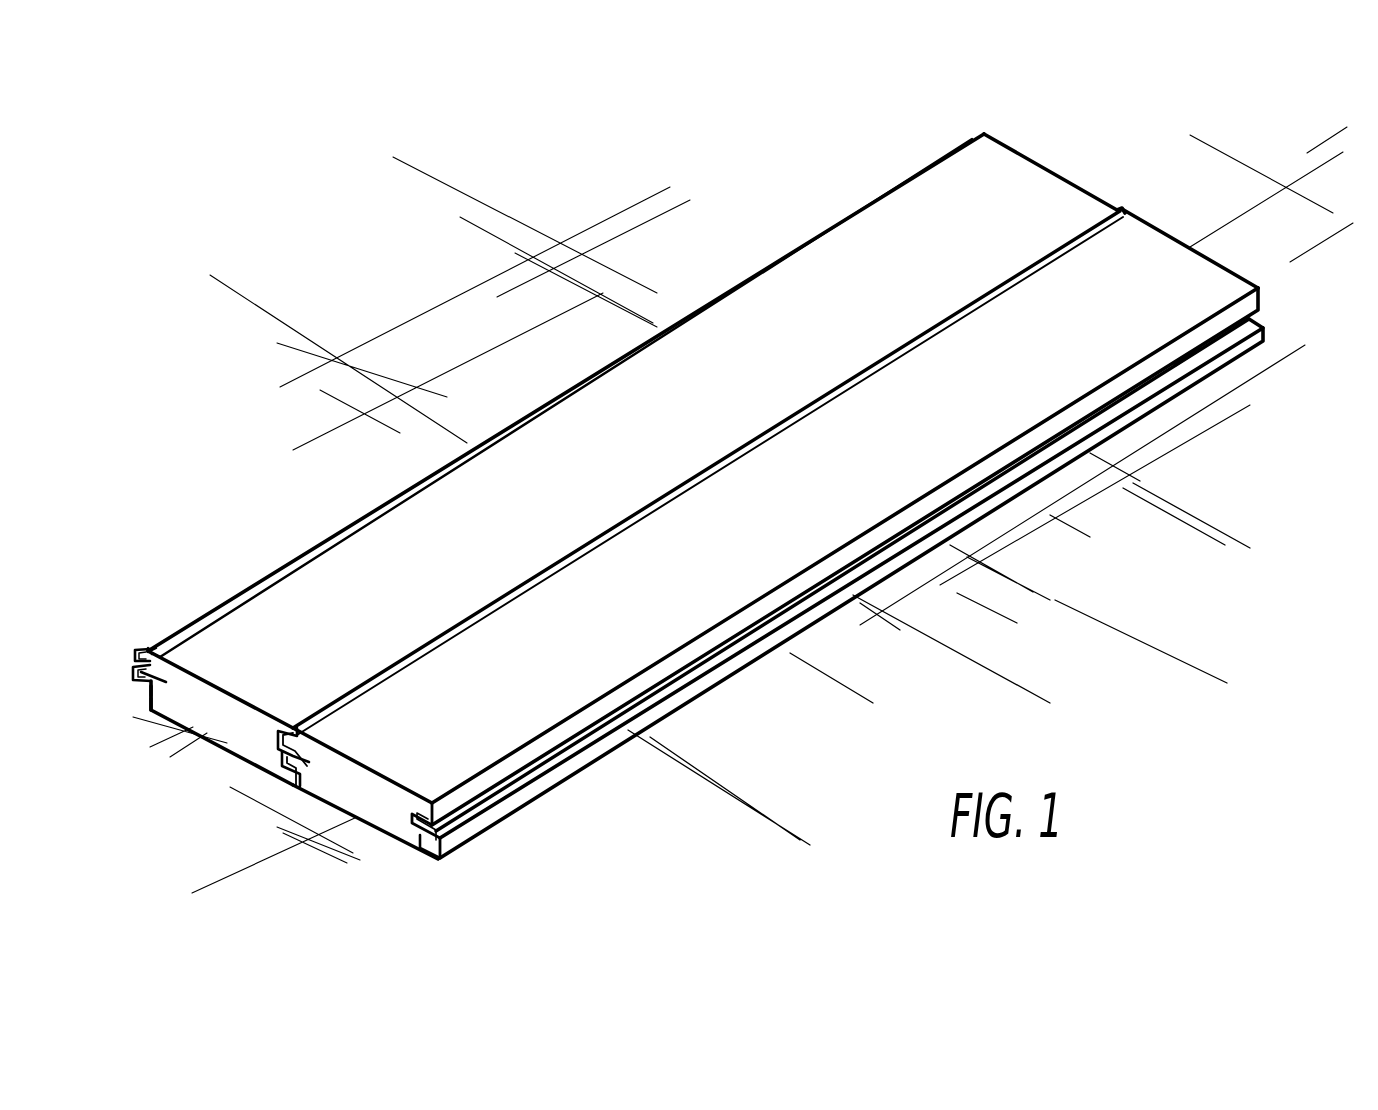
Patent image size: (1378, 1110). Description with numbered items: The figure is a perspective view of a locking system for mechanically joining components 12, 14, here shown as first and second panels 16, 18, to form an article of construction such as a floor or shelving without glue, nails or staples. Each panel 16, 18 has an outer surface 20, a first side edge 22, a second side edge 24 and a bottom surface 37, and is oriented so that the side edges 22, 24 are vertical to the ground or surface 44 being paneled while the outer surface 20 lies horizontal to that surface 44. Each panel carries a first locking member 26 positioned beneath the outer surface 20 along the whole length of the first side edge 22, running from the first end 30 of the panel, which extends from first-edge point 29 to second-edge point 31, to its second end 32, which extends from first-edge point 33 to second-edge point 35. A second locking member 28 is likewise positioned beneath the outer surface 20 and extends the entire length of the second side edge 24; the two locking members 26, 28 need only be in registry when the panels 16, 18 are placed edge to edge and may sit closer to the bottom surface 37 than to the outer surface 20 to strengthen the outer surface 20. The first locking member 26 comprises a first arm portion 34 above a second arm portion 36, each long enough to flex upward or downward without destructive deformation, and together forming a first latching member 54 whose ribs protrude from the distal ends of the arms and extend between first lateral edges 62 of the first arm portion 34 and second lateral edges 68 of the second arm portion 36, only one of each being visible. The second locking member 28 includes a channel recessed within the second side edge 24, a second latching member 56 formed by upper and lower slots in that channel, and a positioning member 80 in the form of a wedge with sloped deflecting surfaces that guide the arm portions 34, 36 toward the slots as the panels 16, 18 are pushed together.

The component 12 is at (1033, 206).
The component 14 is at (1057, 363).
The first panel 16 is at (622, 470).
The second panel 18 is at (628, 598).
The outer surface 20 is at (868, 435).
The first side edge 22 is at (703, 305).
The second side edge 24 is at (772, 598).
The first locking member 26 is at (262, 577).
The second locking member 28 is at (1175, 365).
The first-edge point 29 is at (153, 710).
The first end 30 is at (220, 723).
The second-edge point 31 is at (287, 785).
The second end 32 is at (1210, 255).
The first-edge point 33 is at (1123, 212).
The first arm portion 34 is at (131, 660).
The second-edge point 35 is at (1262, 298).
The second arm portion 36 is at (129, 683).
The bottom surface 37 is at (363, 823).
The surface 44 is at (1042, 661).
The first latching member 54 is at (153, 648).
The second latching member 56 is at (440, 858).
The first lateral edge 62 is at (150, 653).
The second lateral edge 68 is at (150, 693).
The positioning member 80 is at (424, 857).